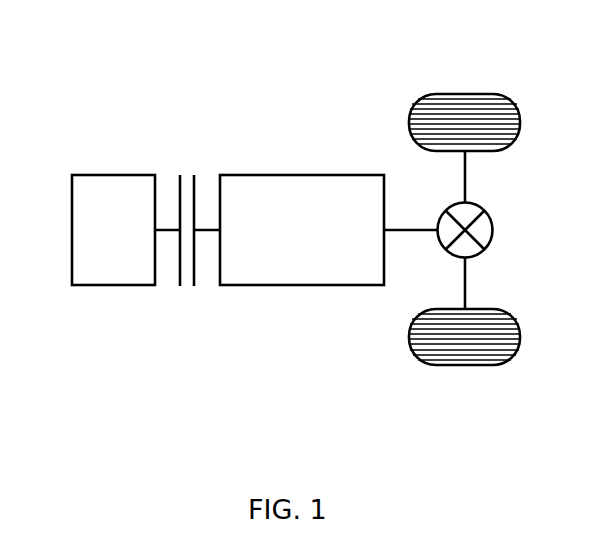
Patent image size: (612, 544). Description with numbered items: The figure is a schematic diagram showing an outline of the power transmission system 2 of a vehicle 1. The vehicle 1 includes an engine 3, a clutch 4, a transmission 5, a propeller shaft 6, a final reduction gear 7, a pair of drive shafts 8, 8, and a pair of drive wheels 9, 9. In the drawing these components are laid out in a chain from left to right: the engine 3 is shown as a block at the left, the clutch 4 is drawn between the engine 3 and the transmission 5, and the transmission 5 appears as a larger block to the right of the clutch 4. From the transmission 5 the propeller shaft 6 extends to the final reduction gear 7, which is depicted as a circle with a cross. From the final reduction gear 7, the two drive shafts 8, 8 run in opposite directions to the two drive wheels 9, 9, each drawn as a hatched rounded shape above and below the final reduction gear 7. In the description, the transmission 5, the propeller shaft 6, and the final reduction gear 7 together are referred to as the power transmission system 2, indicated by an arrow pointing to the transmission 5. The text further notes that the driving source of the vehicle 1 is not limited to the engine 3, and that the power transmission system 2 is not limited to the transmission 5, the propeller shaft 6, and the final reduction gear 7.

The vehicle 1 is at (61, 97).
The power transmission system 2 is at (330, 310).
The engine 3 is at (113, 175).
The clutch 4 is at (188, 175).
The transmission 5 is at (302, 175).
The propeller shaft 6 is at (409, 229).
The final reduction gear 7 is at (493, 231).
The drive shafts 8 is at (467, 176).
The drive wheels 9 is at (520, 120).